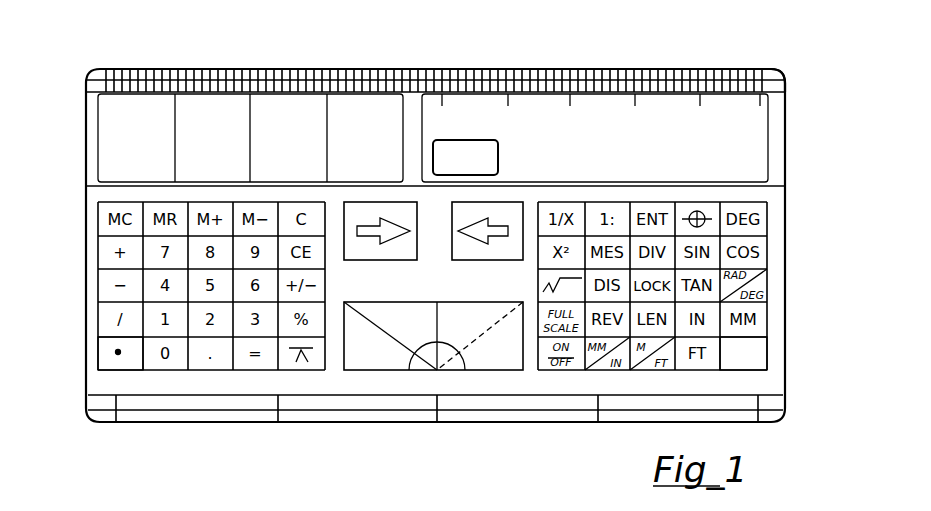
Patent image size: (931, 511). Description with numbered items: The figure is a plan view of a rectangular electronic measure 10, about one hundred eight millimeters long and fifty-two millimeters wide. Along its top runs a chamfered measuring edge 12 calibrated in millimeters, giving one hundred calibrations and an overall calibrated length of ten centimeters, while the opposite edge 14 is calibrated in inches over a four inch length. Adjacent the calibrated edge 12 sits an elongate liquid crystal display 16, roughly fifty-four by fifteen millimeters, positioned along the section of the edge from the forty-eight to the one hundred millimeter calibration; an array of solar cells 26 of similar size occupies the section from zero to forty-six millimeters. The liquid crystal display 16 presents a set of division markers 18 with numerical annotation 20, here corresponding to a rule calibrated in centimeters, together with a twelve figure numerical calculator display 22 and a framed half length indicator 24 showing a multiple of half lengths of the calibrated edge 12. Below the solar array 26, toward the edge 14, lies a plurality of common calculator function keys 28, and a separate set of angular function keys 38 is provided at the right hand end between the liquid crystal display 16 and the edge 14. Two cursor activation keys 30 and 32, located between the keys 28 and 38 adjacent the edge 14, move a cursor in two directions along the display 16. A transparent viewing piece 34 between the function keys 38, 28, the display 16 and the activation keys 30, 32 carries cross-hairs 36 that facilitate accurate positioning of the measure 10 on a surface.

The electronic measure 10 is at (73, 160).
The chamfered measuring edge 12 is at (523, 69).
The edge 14 is at (192, 425).
The elongate liquid crystal display 16 is at (784, 78).
The division markers 18 is at (572, 100).
The numerical annotation 20 is at (640, 104).
The twelve figure numerical calculator display 22 is at (743, 153).
The half length indicator 24 is at (457, 142).
The array of solar cells 26 is at (203, 107).
The calculator function keys 28 is at (110, 362).
The cursor activation key 30 is at (363, 262).
The cursor activation key 32 is at (507, 262).
The transparent viewing piece 34 is at (388, 358).
The cross-hairs 36 is at (445, 358).
The function keys 38 is at (730, 362).